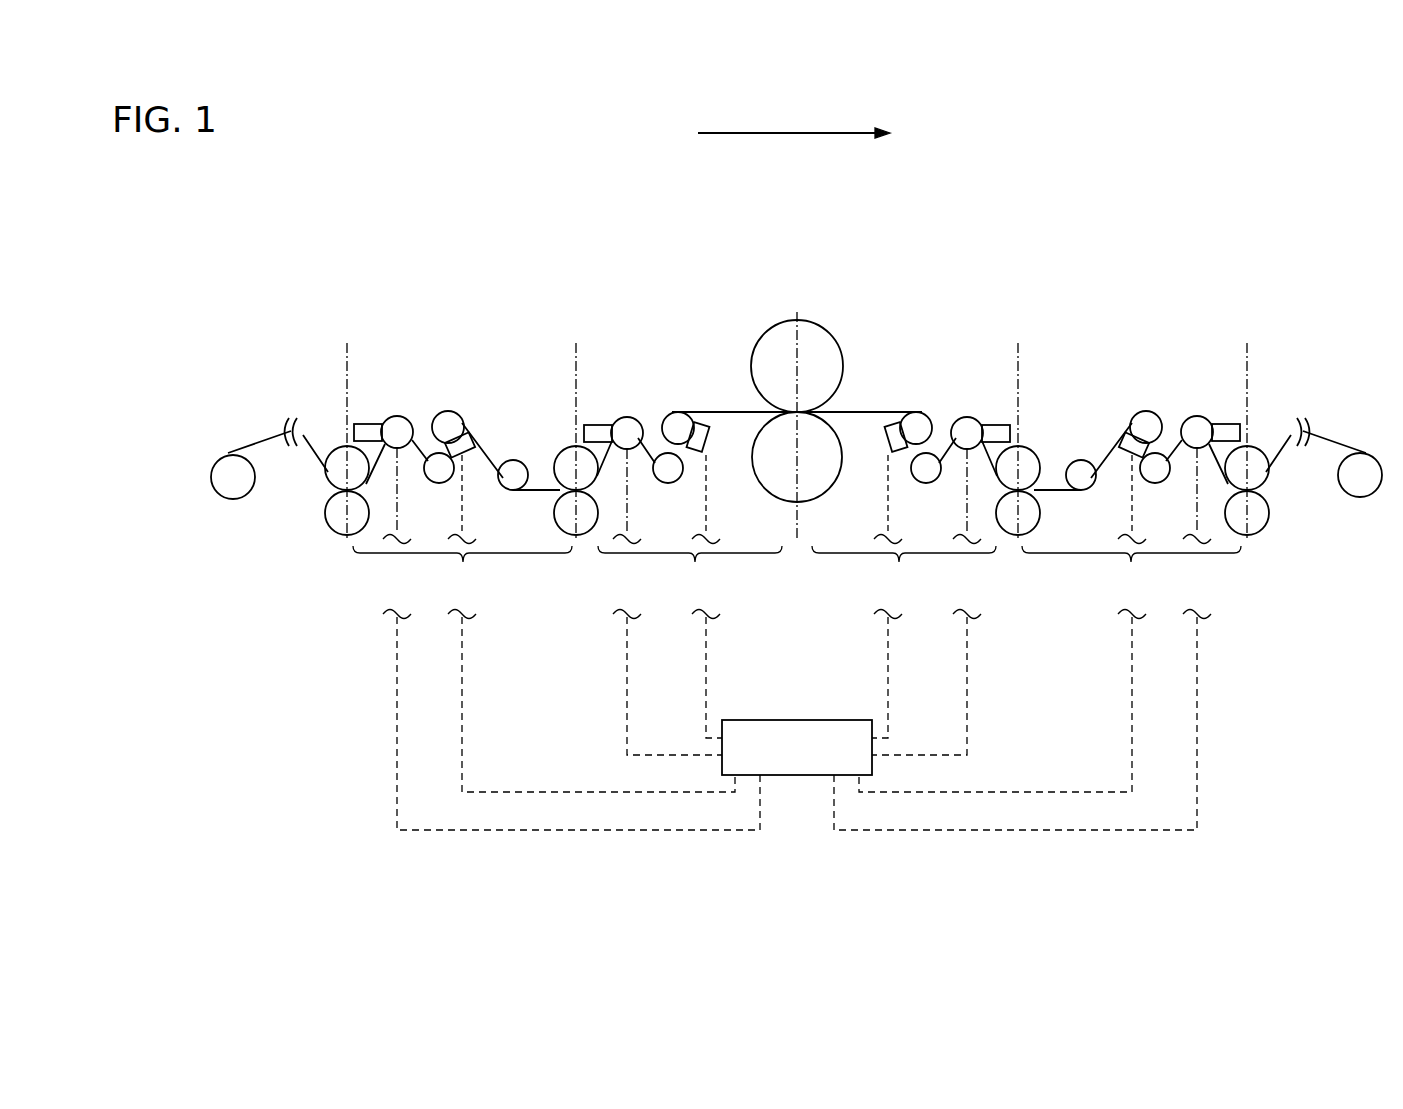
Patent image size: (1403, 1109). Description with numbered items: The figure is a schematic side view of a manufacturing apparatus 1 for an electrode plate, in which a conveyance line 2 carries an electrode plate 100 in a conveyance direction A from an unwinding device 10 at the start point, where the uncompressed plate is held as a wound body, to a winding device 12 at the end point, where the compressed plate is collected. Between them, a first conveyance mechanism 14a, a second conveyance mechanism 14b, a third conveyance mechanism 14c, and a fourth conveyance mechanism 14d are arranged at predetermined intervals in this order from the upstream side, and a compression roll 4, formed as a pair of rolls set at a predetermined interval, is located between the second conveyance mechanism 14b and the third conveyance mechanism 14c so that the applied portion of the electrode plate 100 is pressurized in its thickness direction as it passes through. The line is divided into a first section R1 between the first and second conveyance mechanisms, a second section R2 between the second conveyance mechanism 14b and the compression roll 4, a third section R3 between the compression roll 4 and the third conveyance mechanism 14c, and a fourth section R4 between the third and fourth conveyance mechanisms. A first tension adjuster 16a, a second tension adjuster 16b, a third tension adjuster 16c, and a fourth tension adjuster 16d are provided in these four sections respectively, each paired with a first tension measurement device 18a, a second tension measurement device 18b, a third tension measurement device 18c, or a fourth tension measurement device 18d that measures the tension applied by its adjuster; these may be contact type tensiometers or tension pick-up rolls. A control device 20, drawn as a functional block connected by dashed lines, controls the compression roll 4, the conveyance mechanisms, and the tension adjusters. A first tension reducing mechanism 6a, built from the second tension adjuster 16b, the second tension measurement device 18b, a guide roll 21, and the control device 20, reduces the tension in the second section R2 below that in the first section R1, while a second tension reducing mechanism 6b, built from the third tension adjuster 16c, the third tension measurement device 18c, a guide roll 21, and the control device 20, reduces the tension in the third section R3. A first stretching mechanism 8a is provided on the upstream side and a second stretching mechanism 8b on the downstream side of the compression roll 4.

The manufacturing apparatus 1 is at (785, 944).
The conveyance line 2 is at (168, 475).
The compression roll 4 is at (815, 310).
The first tension reducing mechanism 6a is at (687, 298).
The second tension reducing mechanism 6b is at (919, 298).
The first stretching mechanism 8a is at (466, 298).
The second stretching mechanism 8b is at (1128, 298).
The unwinding device 10 is at (228, 499).
The winding device 12 is at (1365, 497).
The first conveyance mechanism 14a is at (330, 543).
The second conveyance mechanism 14b is at (580, 540).
The third conveyance mechanism 14c is at (1012, 538).
The fourth conveyance mechanism 14d is at (1260, 533).
The first tension adjuster 16a is at (397, 416).
The second tension adjuster 16b is at (627, 417).
The third tension adjuster 16c is at (967, 417).
The fourth tension adjuster 16d is at (1197, 416).
The first tension measurement device 18a is at (473, 447).
The second tension measurement device 18b is at (713, 433).
The third tension measurement device 18c is at (881, 433).
The fourth tension measurement device 18d is at (1121, 447).
The control device 20 is at (797, 776).
The guide roll 21 is at (448, 410).
The electrode plate 100 is at (267, 441).
The conveyance direction A is at (794, 121).
The first section R1 is at (462, 570).
The second section R2 is at (690, 570).
The third section R3 is at (904, 570).
The fourth section R4 is at (1131, 570).